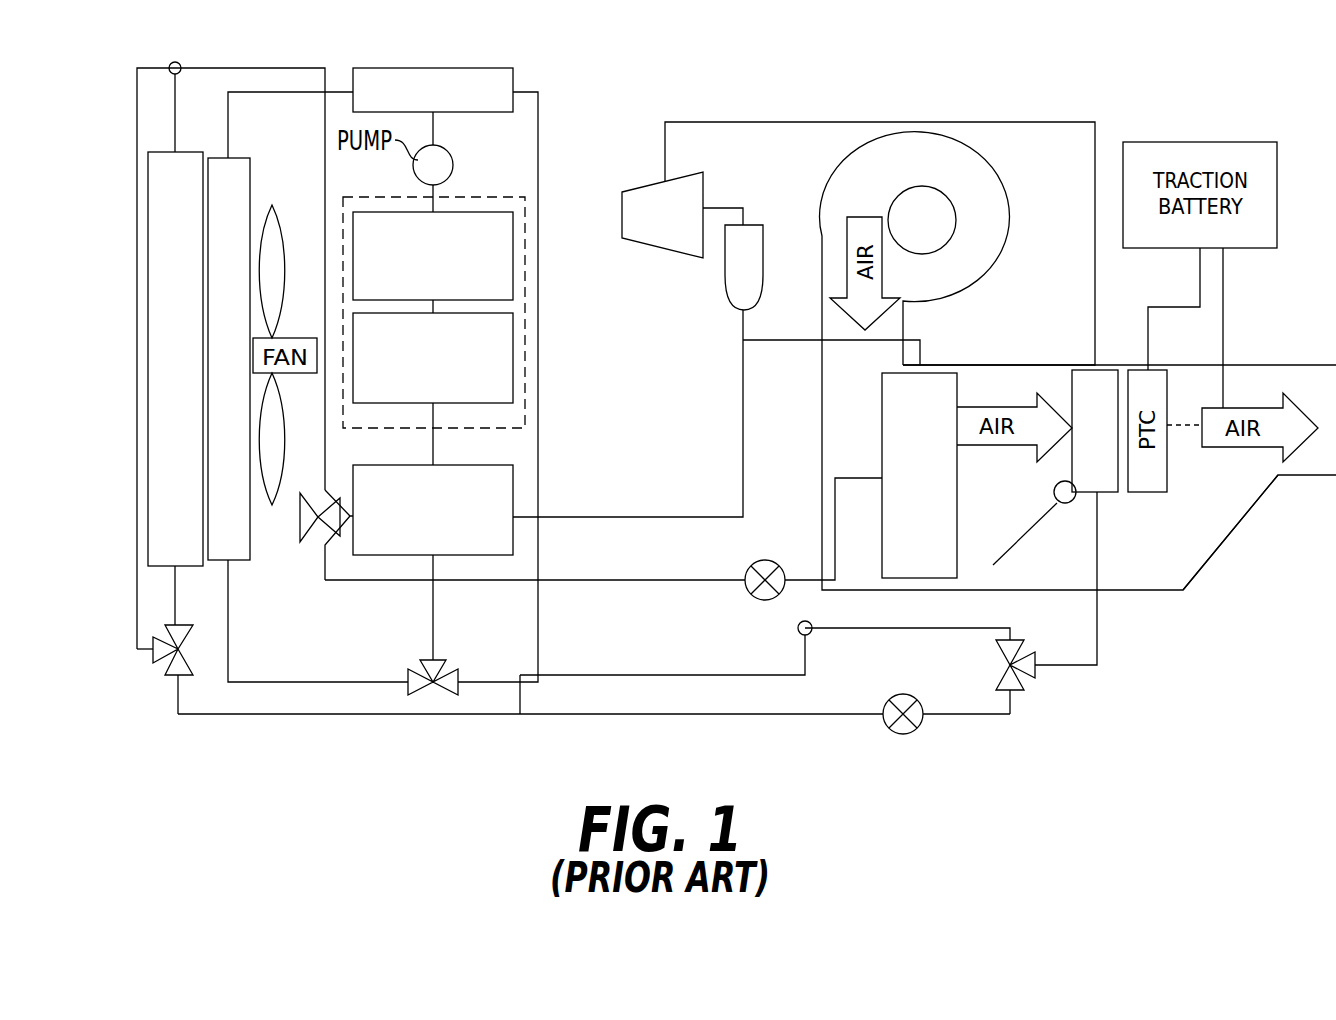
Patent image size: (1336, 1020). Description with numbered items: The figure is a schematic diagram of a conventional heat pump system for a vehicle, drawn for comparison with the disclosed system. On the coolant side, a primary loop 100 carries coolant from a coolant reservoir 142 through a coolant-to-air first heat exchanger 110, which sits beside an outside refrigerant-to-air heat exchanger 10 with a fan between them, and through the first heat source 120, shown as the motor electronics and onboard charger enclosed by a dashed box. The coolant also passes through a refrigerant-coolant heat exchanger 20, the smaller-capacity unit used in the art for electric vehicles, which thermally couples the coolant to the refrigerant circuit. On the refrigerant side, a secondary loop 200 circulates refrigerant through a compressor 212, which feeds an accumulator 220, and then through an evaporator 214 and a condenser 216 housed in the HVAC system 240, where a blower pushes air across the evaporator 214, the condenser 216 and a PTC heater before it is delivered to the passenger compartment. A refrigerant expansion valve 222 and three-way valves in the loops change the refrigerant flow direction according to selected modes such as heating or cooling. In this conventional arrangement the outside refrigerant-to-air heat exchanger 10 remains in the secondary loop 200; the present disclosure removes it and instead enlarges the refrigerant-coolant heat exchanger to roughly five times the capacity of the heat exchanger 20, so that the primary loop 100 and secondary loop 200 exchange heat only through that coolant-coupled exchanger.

The refrigerant-to-air heat exchanger 10 is at (148, 197).
The refrigerant-coolant heat exchanger 20 is at (514, 500).
The primary loop 100 is at (539, 129).
The first heat exchanger 110 is at (250, 172).
The first heat source 120 is at (526, 408).
The coolant reservoir 142 is at (515, 82).
The secondary loop 200 is at (278, 715).
The compressor 212 is at (705, 187).
The evaporator 214 is at (960, 535).
The condenser 216 is at (1105, 493).
The accumulator 220 is at (765, 243).
The refrigerant expansion valve 222 is at (765, 560).
The HVAC system 240 is at (1225, 513).